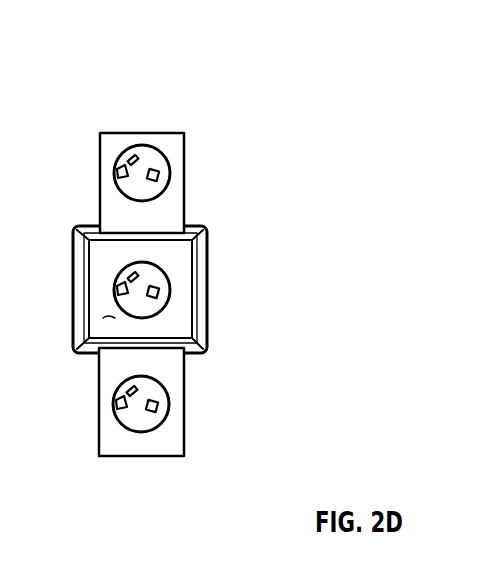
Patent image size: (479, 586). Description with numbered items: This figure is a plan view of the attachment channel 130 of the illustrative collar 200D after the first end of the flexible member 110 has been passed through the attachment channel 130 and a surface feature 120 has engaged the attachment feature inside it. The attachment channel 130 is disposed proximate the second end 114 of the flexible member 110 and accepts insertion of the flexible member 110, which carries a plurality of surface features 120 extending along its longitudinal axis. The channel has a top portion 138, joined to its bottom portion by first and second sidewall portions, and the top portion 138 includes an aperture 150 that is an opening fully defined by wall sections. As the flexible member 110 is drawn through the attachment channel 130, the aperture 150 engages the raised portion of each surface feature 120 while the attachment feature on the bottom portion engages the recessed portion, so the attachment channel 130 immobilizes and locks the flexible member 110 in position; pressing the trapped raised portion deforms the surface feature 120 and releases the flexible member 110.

The power distribution assembly 200D is at (392, 68).
The flexible member 110 is at (195, 172).
The surface features 120 is at (160, 160).
The attachment channel 130 is at (213, 306).
The aperture 150 is at (150, 263).
The second end 114 is at (208, 346).
The top portion 138 is at (103, 318).